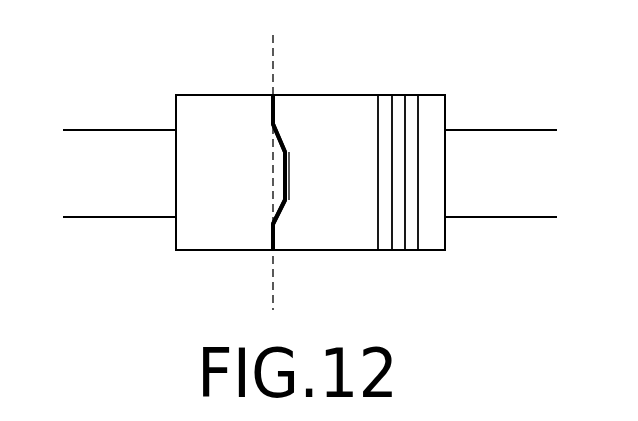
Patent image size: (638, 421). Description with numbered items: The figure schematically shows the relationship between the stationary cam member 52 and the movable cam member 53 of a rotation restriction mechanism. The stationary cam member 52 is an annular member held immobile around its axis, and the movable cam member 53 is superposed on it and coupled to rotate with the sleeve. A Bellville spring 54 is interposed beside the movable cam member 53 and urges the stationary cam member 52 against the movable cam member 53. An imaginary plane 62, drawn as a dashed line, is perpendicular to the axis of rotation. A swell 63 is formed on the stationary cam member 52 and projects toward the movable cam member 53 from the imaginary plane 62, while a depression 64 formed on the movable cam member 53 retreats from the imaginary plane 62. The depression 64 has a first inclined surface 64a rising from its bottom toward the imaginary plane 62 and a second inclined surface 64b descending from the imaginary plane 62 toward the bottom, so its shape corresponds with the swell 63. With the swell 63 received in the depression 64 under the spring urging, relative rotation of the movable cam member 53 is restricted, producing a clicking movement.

The stationary cam member 52 is at (185, 102).
The movable cam member 53 is at (365, 246).
The Bellville spring 54 is at (412, 102).
The imaginary plane 62 is at (270, 45).
The swell 63 is at (289, 190).
The depression 64 is at (297, 145).
The first inclined surface 64a is at (279, 133).
The second inclined surface 64b is at (279, 210).